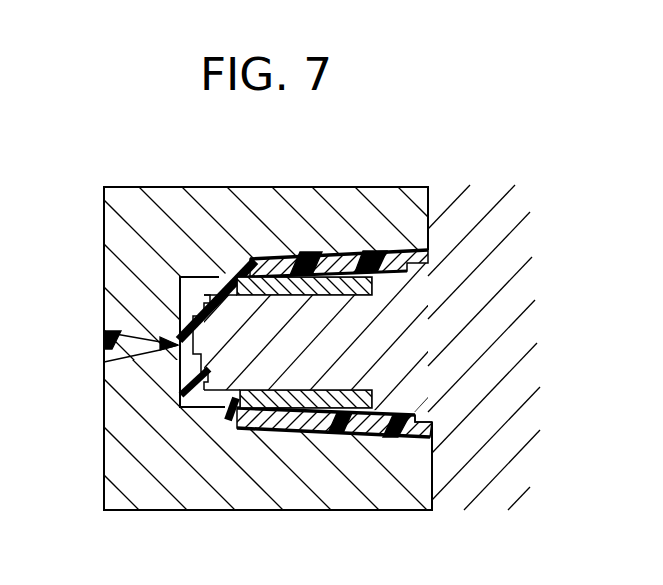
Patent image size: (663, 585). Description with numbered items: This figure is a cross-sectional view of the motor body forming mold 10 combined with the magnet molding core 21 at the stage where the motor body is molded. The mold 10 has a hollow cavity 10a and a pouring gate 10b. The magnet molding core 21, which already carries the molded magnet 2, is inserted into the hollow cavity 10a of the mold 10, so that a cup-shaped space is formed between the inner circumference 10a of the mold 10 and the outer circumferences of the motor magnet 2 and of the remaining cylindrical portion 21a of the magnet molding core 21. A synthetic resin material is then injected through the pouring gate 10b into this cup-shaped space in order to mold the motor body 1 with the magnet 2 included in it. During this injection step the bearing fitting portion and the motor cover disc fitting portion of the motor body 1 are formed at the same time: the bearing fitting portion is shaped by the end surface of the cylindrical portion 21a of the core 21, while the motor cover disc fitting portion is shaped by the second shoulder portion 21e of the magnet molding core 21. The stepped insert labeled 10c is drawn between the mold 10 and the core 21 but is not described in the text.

The motor body forming mold 10 is at (370, 185).
The hollow cavity 10a is at (267, 258).
The pouring gate 10b is at (108, 348).
The stepped insert 10c is at (207, 294).
The magnet molding core 21 is at (357, 336).
The cylindrical portion 21a is at (297, 352).
The second shoulder portion 21e is at (410, 415).
The motor body 1 is at (261, 424).
The magnet 2 is at (333, 406).